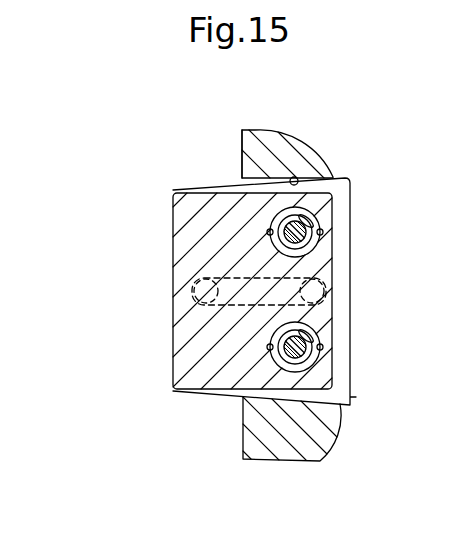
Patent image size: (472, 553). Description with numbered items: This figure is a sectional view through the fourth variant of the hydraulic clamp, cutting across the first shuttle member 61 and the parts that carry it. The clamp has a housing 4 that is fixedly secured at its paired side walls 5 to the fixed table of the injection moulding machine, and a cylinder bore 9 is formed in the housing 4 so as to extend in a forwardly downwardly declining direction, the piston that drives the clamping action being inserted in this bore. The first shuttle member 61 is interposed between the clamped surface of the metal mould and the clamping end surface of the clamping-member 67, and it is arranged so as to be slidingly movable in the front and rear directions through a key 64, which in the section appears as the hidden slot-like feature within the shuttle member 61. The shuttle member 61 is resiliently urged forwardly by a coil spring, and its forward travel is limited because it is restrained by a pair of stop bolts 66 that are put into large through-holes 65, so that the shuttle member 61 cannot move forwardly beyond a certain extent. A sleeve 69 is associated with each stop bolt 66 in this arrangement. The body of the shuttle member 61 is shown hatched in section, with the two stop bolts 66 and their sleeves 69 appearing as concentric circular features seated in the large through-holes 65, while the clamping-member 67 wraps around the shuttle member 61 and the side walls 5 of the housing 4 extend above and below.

The housing 4 is at (240, 148).
The side wall 5 is at (282, 138).
The cylinder bore 9 is at (297, 179).
The first shuttle member 61 is at (175, 228).
The key 64 is at (193, 309).
The large through-hole 65 is at (271, 231).
The stop bolt 66 is at (320, 334).
The clamping-member 67 is at (346, 200).
The sleeve 69 is at (318, 225).